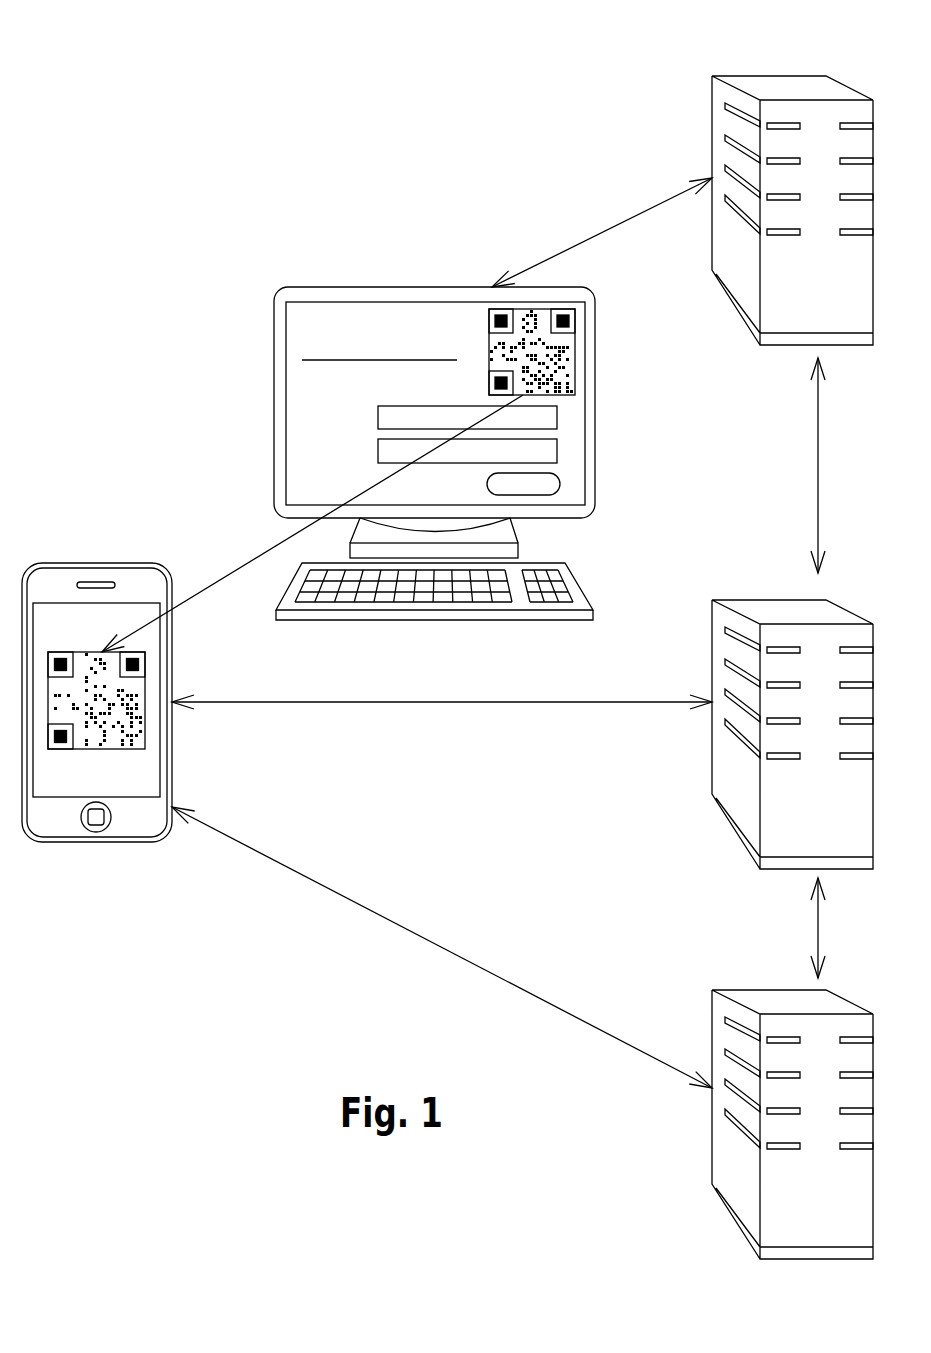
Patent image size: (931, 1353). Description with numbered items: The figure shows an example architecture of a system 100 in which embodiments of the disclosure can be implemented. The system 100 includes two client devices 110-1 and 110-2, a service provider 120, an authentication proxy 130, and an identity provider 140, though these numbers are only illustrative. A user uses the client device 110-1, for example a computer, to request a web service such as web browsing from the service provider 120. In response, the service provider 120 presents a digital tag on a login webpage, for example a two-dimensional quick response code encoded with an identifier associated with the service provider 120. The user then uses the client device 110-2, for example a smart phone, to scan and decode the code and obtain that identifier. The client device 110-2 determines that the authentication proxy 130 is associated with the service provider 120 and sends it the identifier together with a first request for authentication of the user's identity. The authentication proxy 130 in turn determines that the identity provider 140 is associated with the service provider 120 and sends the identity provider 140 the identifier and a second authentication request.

The system 100 is at (203, 286).
The client device 110-1 is at (274, 403).
The client device 110-2 is at (97, 564).
The service provider 120 is at (772, 83).
The authentication proxy 130 is at (762, 998).
The identity provider 140 is at (755, 607).